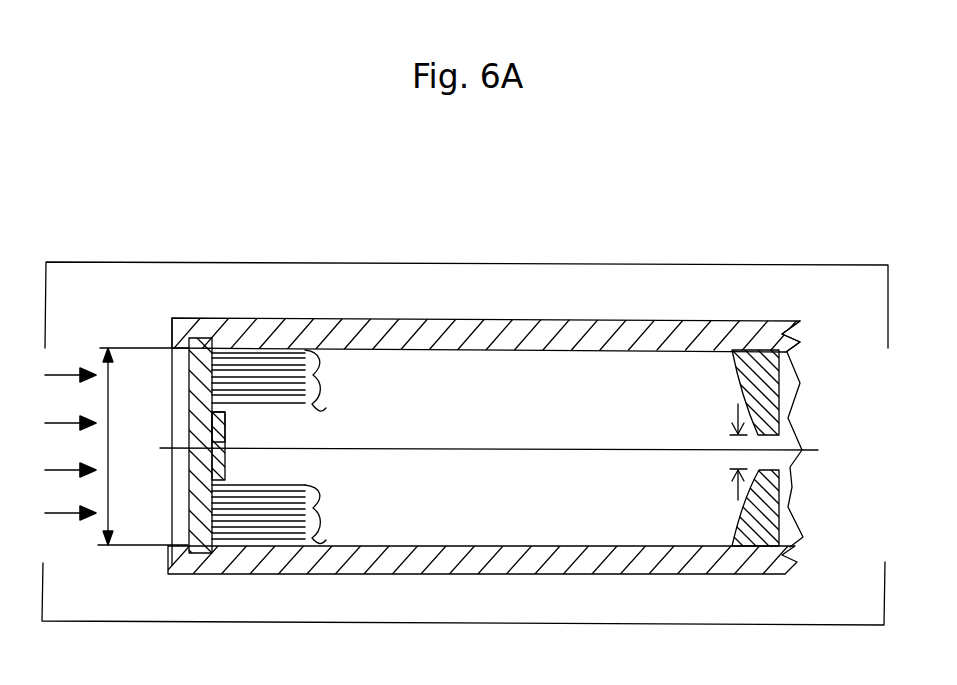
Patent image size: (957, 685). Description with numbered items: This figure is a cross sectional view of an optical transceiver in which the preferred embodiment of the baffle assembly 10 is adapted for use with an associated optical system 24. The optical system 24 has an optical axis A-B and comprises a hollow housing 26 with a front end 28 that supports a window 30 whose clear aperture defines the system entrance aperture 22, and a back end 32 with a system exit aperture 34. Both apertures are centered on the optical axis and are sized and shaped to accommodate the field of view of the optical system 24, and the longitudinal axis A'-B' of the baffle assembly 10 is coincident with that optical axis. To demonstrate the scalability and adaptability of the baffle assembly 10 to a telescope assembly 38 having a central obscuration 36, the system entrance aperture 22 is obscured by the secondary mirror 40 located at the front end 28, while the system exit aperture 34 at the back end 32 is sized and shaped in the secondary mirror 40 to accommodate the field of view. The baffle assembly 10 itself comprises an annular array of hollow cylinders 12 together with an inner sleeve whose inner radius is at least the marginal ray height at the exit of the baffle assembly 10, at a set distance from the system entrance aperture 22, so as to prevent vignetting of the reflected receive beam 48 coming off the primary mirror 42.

The baffle assembly 10 is at (327, 404).
The hollow cylinders 12 is at (258, 366).
The system entrance aperture 22 is at (108, 494).
The optical system 24 is at (792, 516).
The hollow housing 26 is at (512, 328).
The front end 28 is at (168, 318).
The window 30 is at (196, 555).
The back end 32 is at (800, 324).
The system exit aperture 34 is at (730, 438).
The central obscuration 36 is at (218, 460).
The telescope assembly 38 is at (513, 623).
The secondary mirror 40 is at (226, 424).
The primary mirror 42 is at (748, 505).
The reflected receive beam 48 is at (80, 514).